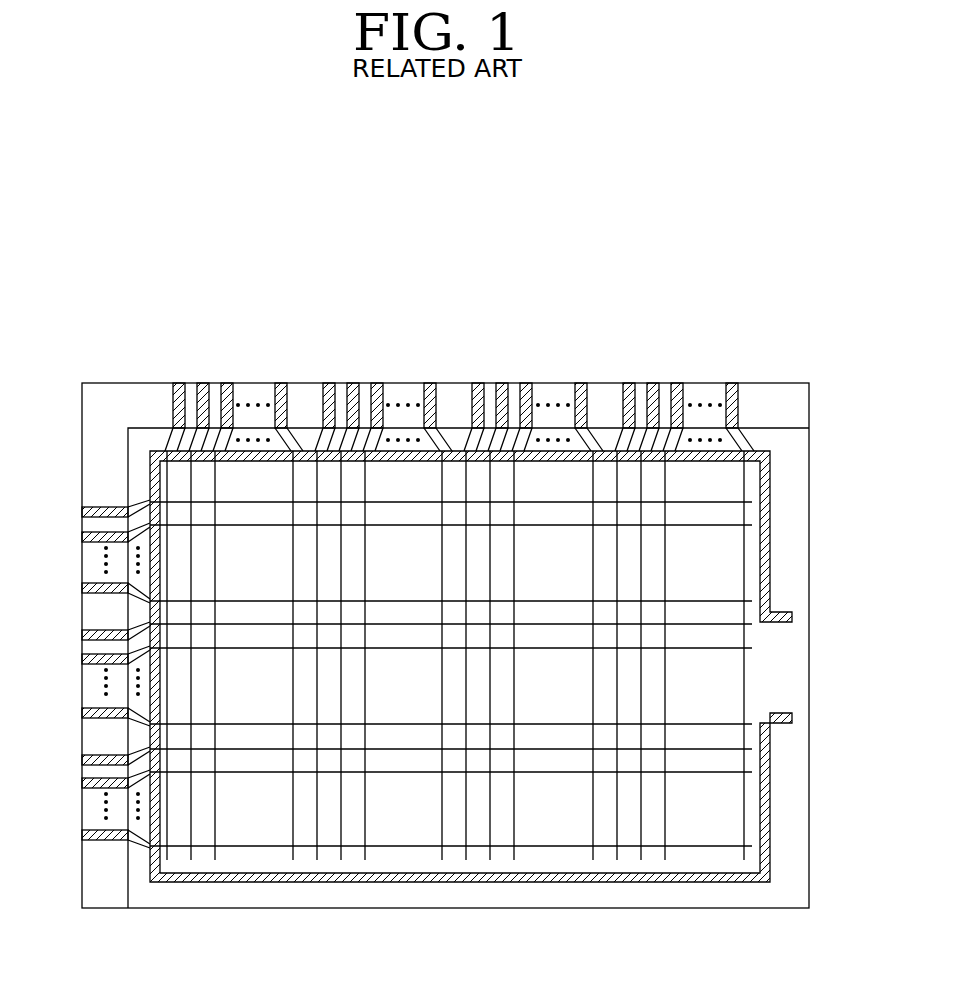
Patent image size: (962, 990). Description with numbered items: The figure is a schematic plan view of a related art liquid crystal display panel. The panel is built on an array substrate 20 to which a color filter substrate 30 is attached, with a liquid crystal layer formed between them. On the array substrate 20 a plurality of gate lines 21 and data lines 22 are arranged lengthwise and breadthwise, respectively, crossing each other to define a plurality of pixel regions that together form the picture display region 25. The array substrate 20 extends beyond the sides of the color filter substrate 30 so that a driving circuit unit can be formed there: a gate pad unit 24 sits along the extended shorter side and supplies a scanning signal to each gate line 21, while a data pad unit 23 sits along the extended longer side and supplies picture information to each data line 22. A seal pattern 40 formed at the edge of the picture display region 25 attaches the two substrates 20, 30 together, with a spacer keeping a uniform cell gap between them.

The array substrate 20 is at (797, 410).
The gate line 21 is at (720, 848).
The data line 22 is at (745, 792).
The data pad unit 23 is at (737, 372).
The gate pad unit 24 is at (73, 506).
The picture display region 25 is at (422, 577).
The color filter substrate 30 is at (797, 470).
The seal pattern 40 is at (768, 541).